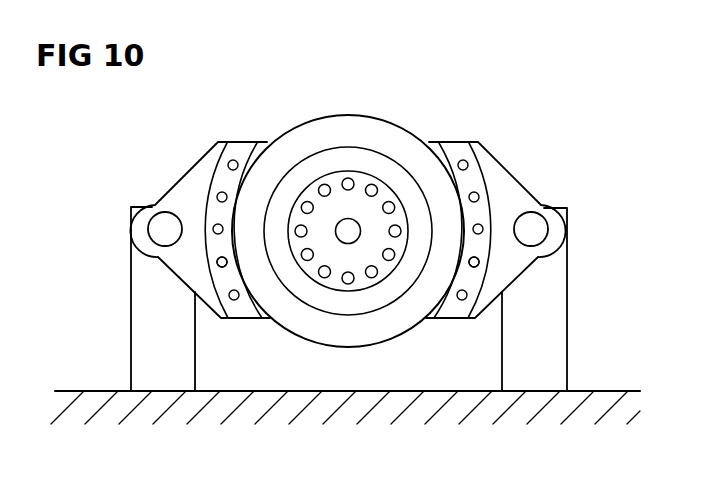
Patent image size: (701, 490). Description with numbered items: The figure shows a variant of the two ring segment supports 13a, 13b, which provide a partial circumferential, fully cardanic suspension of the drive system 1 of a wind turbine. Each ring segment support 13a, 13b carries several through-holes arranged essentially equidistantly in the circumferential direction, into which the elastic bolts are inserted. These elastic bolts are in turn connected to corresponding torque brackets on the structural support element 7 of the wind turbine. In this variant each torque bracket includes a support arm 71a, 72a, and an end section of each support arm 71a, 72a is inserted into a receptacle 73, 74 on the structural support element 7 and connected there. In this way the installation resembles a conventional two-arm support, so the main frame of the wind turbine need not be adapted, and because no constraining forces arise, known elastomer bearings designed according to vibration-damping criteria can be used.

The electric machine / housing 1 is at (352, 137).
The structural support element 7 is at (410, 419).
The ring segment support 13a is at (254, 152).
The ring segment support 13b is at (442, 152).
The support arm 71a is at (180, 182).
The support arm 72a is at (517, 183).
The receptacle 73 is at (131, 335).
The receptacle 74 is at (567, 337).